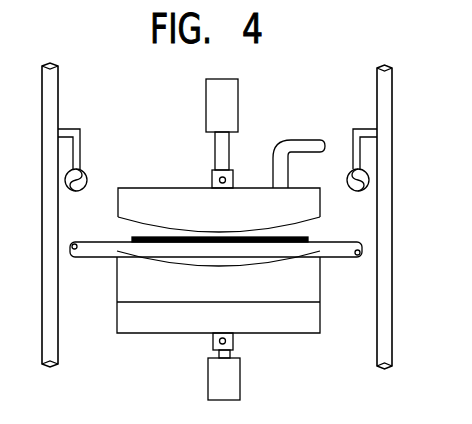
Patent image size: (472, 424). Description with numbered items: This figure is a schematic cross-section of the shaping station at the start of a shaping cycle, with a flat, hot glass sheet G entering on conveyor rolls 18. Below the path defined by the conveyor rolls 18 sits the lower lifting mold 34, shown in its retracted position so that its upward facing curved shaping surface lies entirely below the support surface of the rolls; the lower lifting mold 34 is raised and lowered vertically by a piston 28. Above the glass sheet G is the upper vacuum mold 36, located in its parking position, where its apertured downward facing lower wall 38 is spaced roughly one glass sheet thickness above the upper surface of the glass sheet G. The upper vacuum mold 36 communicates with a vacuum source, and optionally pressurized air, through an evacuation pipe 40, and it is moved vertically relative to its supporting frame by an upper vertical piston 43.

The conveyor rolls 18 is at (90, 258).
The piston 28 is at (243, 380).
The lower lifting mold 34 is at (322, 318).
The upper vacuum mold 36 is at (196, 190).
The lower wall 38 is at (124, 224).
The evacuation pipe 40 is at (287, 140).
The upper vertical piston 43 is at (239, 105).
The glass sheet G is at (310, 238).